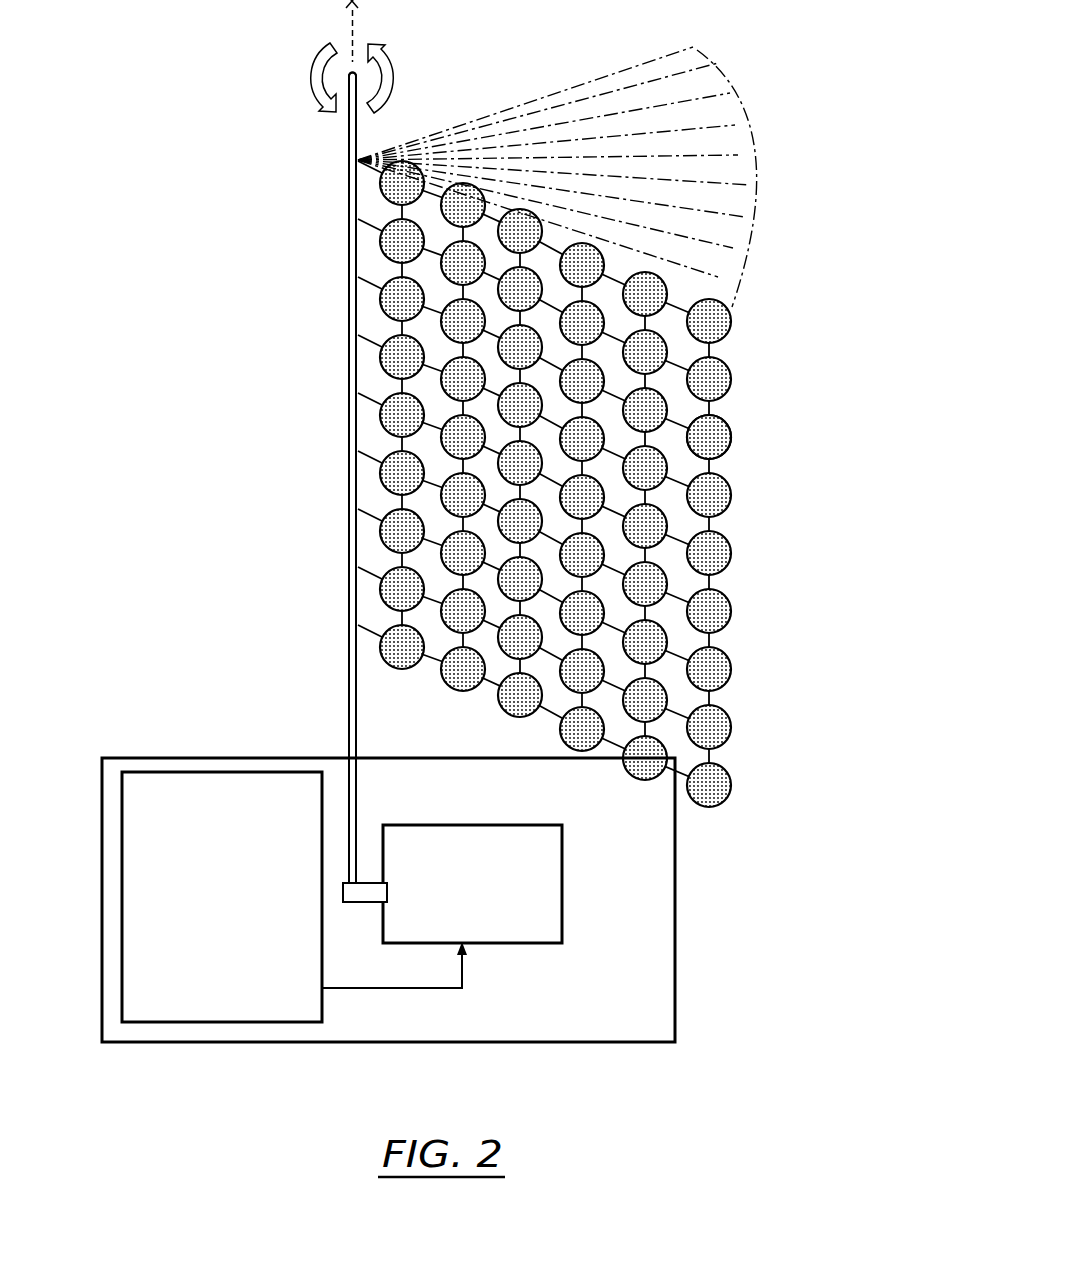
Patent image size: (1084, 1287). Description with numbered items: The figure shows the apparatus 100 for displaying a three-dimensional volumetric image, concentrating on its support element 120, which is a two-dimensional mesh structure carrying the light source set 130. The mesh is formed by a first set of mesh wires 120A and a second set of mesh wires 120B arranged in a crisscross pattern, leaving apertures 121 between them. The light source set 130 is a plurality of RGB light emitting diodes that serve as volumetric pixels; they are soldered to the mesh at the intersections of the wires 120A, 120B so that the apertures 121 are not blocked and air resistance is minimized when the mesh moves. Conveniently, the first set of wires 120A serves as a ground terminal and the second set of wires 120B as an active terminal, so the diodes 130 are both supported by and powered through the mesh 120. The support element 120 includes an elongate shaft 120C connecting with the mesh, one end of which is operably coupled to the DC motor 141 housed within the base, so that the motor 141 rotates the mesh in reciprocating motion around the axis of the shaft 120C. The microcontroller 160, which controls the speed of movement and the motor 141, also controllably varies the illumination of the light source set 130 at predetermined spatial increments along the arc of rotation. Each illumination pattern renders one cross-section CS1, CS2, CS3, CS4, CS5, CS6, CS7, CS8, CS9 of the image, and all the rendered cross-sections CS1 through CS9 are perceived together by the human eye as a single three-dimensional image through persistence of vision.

The apparatus 100 is at (258, 1042).
The support element 120 is at (330, 195).
The first set of mesh wires 120A is at (347, 513).
The second set of mesh wires 120B is at (585, 578).
The elongate shaft 120C is at (347, 325).
The apertures 121 is at (375, 320).
The light source set 130 is at (735, 428).
The DC motor 141 is at (493, 945).
The microcontroller 160 is at (213, 772).
The cross-section CS1 is at (570, 231).
The cross-section CS2 is at (575, 212).
The cross-section CS3 is at (577, 194).
The cross-section CS4 is at (577, 178).
The cross-section CS5 is at (576, 152).
The cross-section CS6 is at (575, 134).
The cross-section CS7 is at (570, 119).
The cross-section CS8 is at (562, 104).
The cross-section CS9 is at (551, 90).